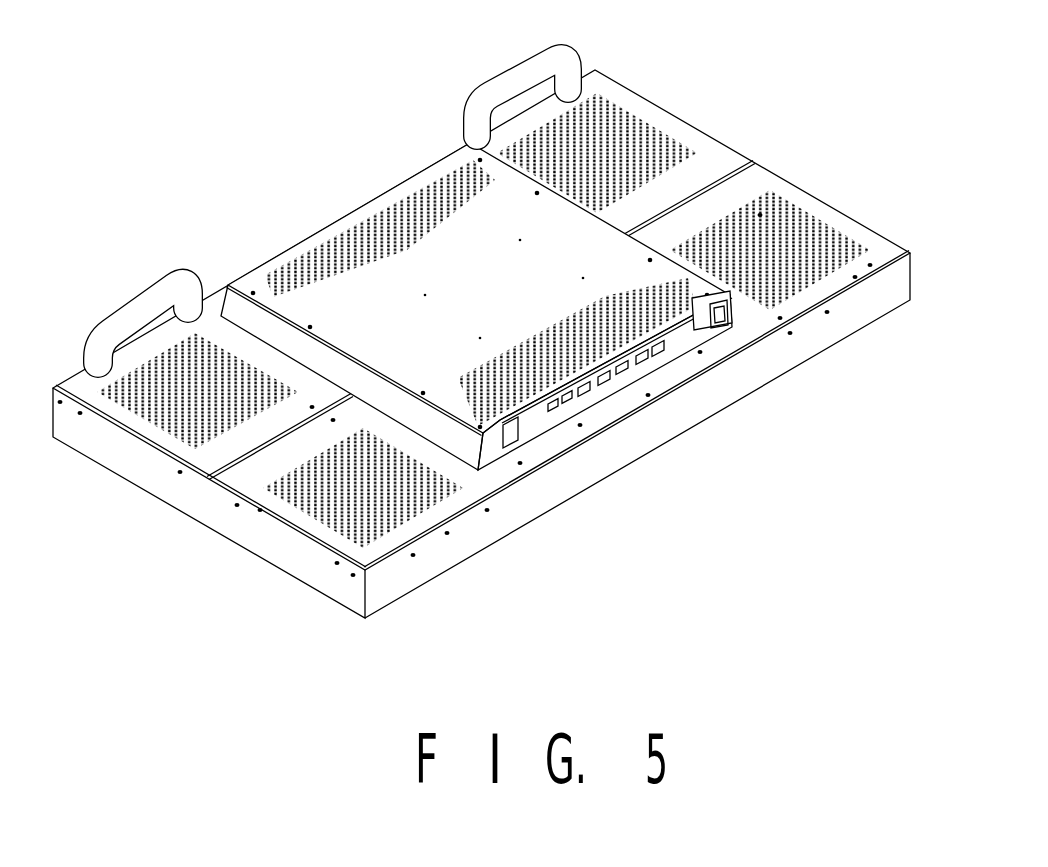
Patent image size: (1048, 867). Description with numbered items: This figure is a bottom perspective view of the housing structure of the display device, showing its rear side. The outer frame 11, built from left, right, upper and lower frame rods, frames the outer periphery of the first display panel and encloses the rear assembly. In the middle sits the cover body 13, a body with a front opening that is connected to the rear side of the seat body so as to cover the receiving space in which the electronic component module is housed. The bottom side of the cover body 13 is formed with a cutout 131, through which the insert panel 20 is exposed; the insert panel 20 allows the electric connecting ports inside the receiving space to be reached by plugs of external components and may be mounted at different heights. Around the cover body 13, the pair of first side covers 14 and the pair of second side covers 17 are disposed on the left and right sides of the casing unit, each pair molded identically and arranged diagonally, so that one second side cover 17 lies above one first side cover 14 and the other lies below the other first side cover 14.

The outer frame 11 is at (892, 292).
The cover body 13 is at (505, 263).
The cutout 131 is at (673, 312).
The first side cover 14 is at (680, 135).
The second side cover 17 is at (813, 210).
The insert panel 20 is at (727, 350).